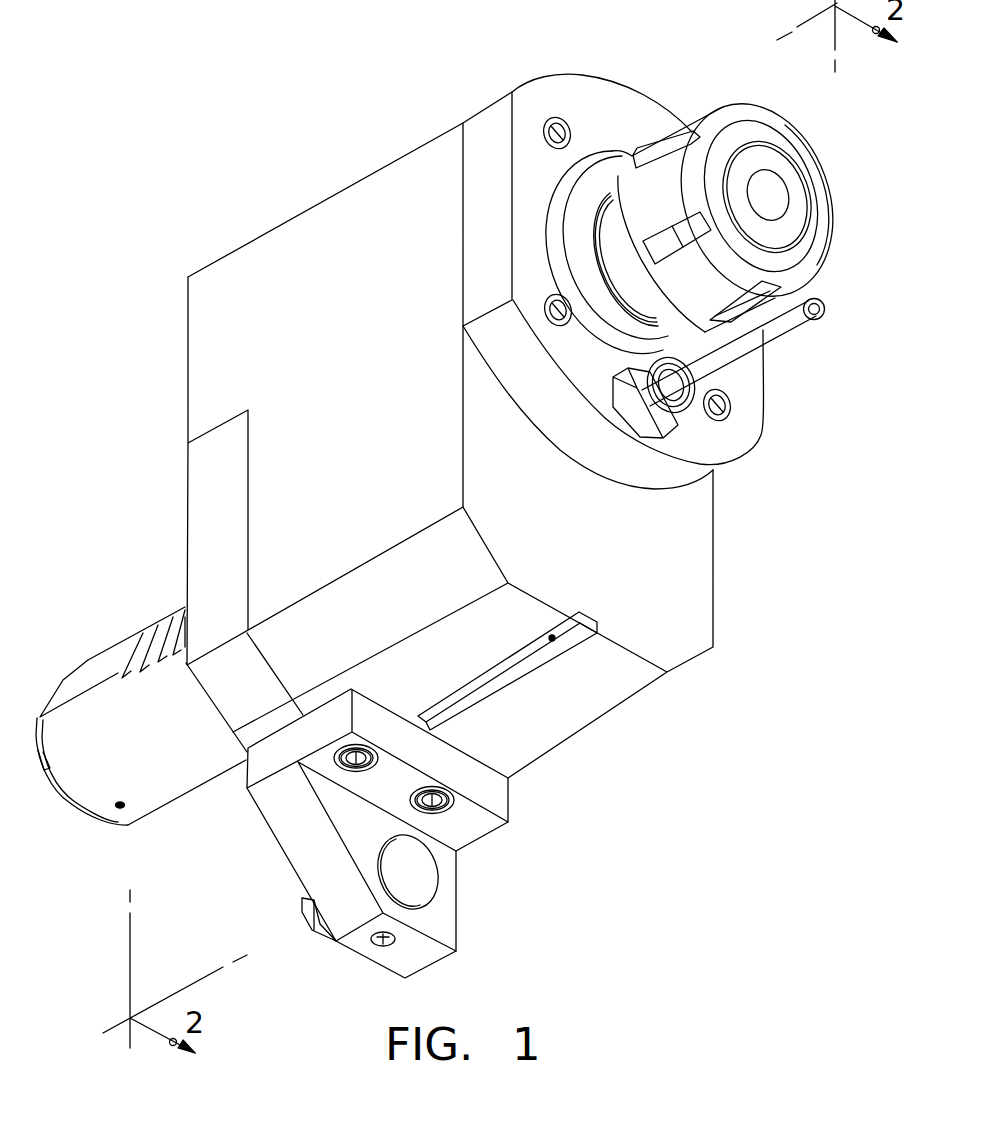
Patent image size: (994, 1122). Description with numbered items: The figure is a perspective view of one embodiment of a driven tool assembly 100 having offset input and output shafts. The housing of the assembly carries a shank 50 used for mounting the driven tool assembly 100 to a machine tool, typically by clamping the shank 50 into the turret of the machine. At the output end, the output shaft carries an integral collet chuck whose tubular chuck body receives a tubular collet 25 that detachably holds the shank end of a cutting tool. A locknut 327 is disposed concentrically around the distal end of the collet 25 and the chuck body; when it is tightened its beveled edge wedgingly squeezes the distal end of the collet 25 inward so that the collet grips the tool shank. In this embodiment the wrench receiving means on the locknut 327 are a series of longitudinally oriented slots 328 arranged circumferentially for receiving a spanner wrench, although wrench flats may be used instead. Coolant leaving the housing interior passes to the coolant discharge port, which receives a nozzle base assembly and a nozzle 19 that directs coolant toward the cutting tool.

The driven tool assembly 100 is at (290, 115).
The longitudinally oriented slots 328 is at (673, 128).
The collet 25 is at (778, 164).
The locknut 327 is at (729, 207).
The nozzle 19 is at (788, 328).
The shank 50 is at (113, 657).